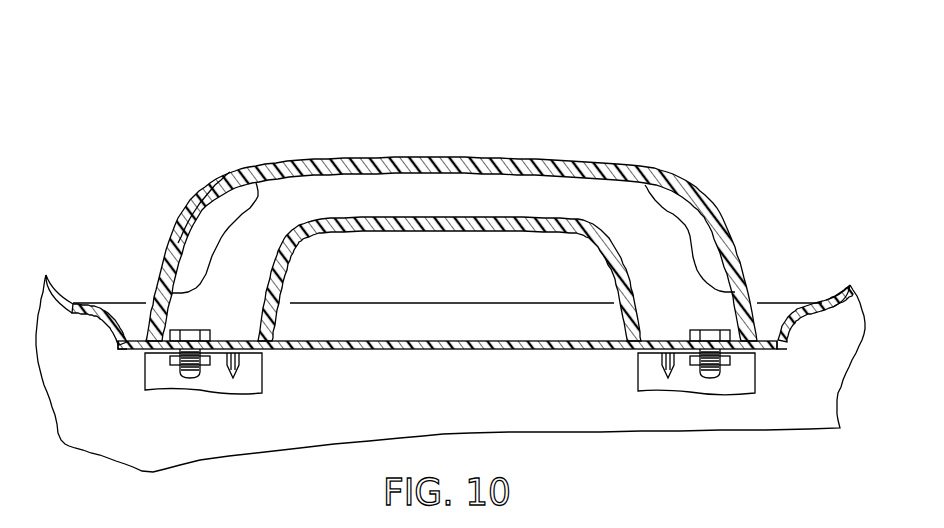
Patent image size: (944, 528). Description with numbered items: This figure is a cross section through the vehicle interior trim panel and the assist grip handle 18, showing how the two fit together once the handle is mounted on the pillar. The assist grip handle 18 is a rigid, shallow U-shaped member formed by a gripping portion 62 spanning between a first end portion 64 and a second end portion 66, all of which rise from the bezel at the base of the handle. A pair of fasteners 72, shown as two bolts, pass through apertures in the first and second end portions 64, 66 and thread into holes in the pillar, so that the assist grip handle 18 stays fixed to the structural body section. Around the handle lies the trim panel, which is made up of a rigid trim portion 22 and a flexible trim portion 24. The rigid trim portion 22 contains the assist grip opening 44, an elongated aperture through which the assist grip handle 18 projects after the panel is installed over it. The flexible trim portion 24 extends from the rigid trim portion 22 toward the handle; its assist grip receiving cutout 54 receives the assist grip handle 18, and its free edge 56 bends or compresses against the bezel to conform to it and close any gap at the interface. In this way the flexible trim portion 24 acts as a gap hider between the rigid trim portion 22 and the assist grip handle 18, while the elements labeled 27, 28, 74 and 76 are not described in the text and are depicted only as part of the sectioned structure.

The assist grip handle 18 is at (404, 150).
The rigid trim portion 22 is at (843, 290).
The flexible trim portion 24 is at (112, 318).
The roof panel edge lip 27 is at (57, 295).
The base plate 28 is at (457, 341).
The assist grip opening 44 is at (798, 303).
The assist grip receiving cutout 54 is at (135, 350).
The free edge 56 is at (778, 348).
The gripping portion 62 is at (483, 166).
The first end portion 64 is at (280, 322).
The second end portion 66 is at (622, 325).
The fasteners 72 is at (190, 330).
The outer left side wall 74 is at (175, 224).
The outer right side wall 76 is at (722, 204).